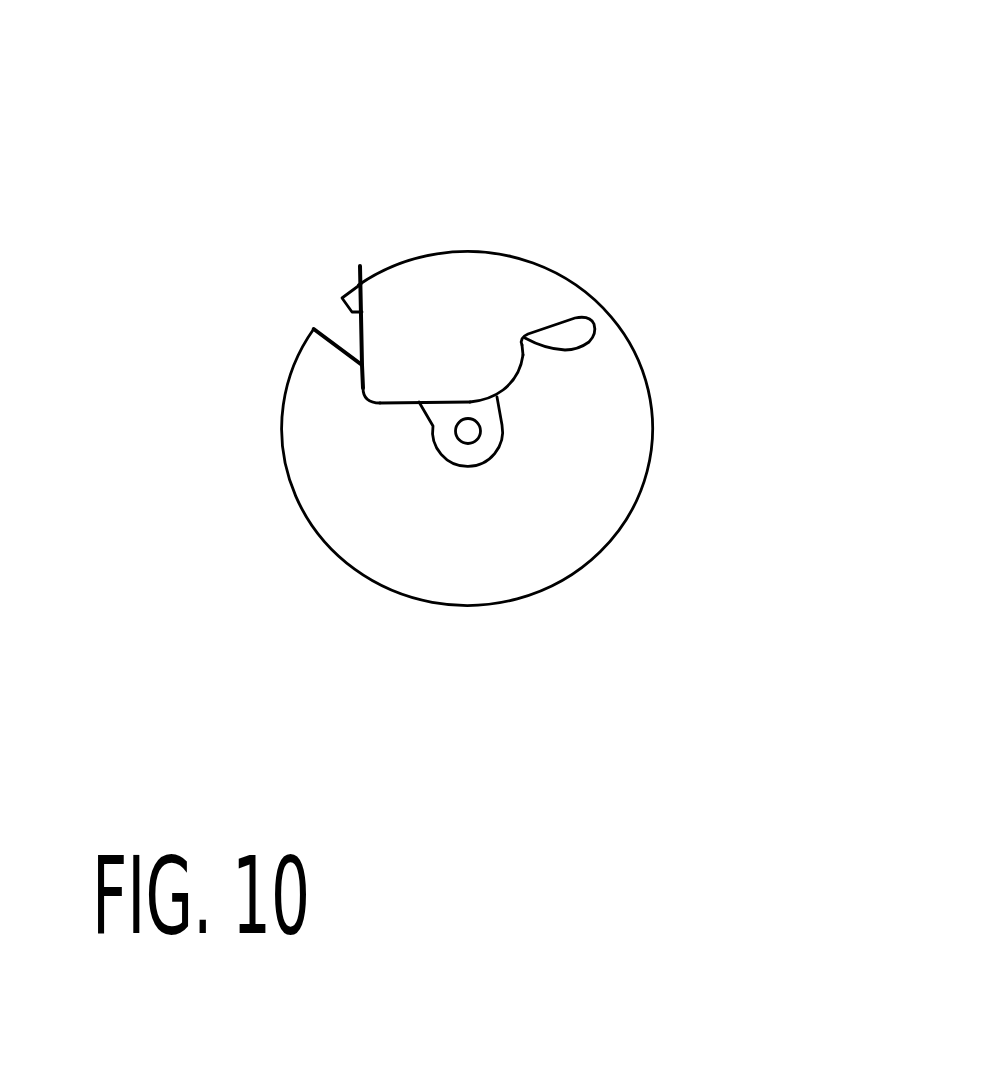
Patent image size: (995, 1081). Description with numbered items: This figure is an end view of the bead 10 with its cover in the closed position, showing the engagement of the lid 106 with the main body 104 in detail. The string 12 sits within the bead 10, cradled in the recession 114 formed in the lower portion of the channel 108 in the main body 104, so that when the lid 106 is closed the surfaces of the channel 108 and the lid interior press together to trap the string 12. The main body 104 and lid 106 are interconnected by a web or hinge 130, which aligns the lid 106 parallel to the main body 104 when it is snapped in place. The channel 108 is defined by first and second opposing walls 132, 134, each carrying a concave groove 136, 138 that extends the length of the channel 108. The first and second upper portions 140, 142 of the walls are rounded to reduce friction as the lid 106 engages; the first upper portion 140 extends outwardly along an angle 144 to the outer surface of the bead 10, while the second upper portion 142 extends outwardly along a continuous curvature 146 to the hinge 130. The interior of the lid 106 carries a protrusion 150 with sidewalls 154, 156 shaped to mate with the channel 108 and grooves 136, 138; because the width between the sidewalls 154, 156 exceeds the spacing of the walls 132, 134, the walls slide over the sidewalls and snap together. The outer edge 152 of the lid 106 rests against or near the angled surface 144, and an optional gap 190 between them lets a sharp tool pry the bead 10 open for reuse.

The bead 10 is at (558, 149).
The string 12 is at (468, 432).
The main body 104 is at (433, 587).
The lid 106 is at (553, 293).
The channel 108 is at (408, 405).
The recession 114 is at (486, 456).
The hinge 130 is at (600, 317).
The first opposing wall 132 is at (363, 372).
The second opposing wall 134 is at (522, 360).
The concave groove 136 is at (360, 392).
The concave groove 138 is at (523, 365).
The first upper portion 140 is at (360, 366).
The second upper portion 142 is at (523, 353).
The angled surface 144 is at (338, 341).
The continuous curvature 146 is at (523, 343).
The protrusion 150 is at (466, 398).
The outer edge 152 is at (360, 283).
The sidewall 154 is at (363, 383).
The sidewall 156 is at (523, 358).
The gap 190 is at (340, 327).